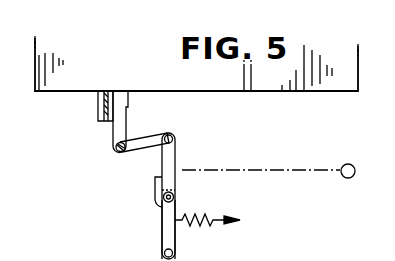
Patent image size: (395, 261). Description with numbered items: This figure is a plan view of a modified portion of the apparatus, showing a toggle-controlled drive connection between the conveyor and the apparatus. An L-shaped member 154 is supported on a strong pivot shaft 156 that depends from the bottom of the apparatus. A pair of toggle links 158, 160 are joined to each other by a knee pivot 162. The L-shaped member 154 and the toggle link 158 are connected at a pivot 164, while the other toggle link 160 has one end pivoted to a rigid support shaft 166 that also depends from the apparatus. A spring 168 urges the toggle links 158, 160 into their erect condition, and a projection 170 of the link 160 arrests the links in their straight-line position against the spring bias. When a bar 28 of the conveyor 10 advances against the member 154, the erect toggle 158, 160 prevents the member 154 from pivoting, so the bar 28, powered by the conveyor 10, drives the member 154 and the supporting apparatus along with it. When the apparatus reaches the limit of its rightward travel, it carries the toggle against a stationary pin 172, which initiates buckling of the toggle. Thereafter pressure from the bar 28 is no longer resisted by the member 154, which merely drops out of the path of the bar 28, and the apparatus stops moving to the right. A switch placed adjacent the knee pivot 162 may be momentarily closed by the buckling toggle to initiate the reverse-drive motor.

The conveyor 10 is at (229, 83).
The bar 28 is at (97, 108).
The L-shaped member 154 is at (130, 117).
The pivot shaft 156 is at (120, 152).
The toggle link 158 is at (178, 161).
The toggle link 160 is at (162, 228).
The knee pivot 162 is at (175, 197).
The pivot 164 is at (173, 139).
The rigid support shaft 166 is at (178, 250).
The spring 168 is at (204, 212).
The projection 170 is at (153, 185).
The stationary pin 172 is at (346, 164).